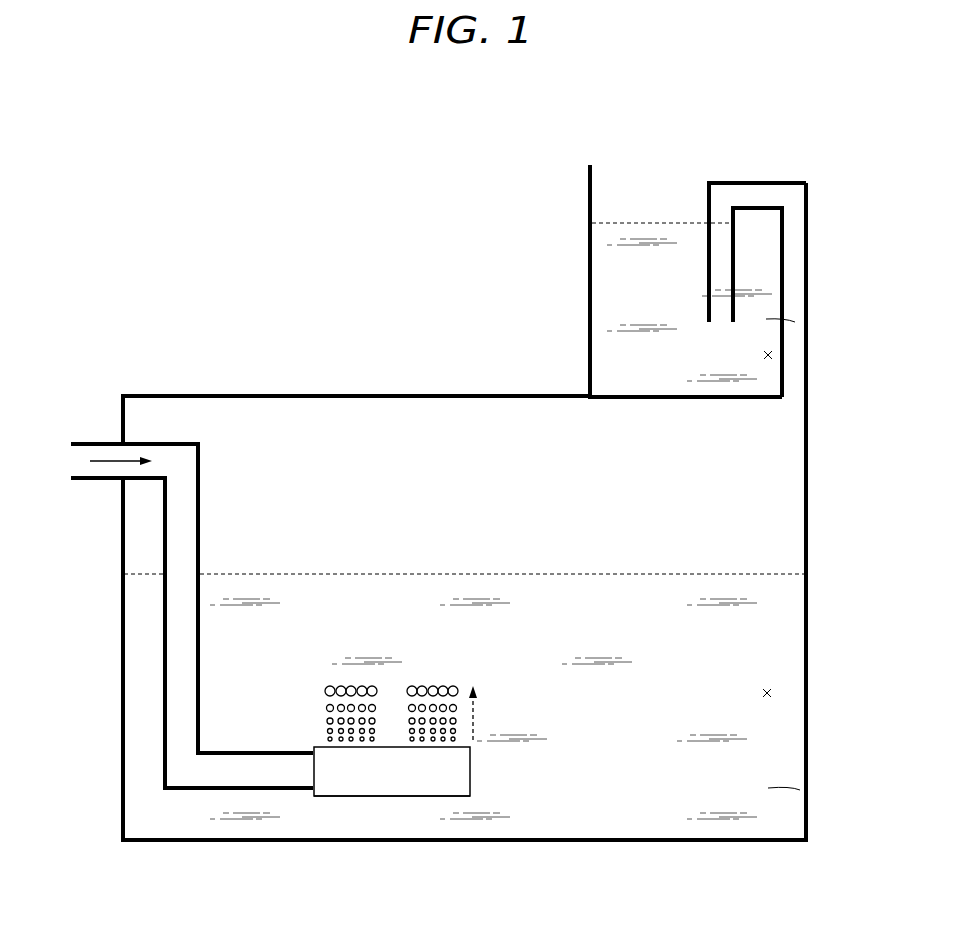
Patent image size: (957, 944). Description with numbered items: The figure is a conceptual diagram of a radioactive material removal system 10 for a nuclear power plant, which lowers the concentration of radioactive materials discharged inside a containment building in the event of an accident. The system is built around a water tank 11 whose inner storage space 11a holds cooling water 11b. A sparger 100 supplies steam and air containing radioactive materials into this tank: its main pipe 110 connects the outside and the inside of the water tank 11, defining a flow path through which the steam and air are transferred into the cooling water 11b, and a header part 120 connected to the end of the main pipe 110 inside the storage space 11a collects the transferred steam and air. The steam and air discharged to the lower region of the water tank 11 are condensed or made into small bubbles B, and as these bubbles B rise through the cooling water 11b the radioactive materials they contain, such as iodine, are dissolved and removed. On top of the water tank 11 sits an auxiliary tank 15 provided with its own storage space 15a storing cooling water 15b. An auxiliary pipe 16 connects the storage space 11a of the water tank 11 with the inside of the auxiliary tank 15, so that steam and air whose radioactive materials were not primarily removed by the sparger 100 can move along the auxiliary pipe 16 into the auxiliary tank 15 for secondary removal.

The radioactive material removal system 10 is at (240, 146).
The water tank 11 is at (123, 762).
The storage space 11a is at (771, 693).
The cooling water 11b is at (800, 790).
The auxiliary tank 15 is at (590, 290).
The storage space 15a is at (772, 355).
The cooling water 15b is at (795, 322).
The auxiliary pipe 16 is at (757, 182).
The main pipe 110 is at (165, 534).
The sparger 100 is at (308, 739).
The header part 120 is at (392, 797).
The bubbles B is at (327, 690).